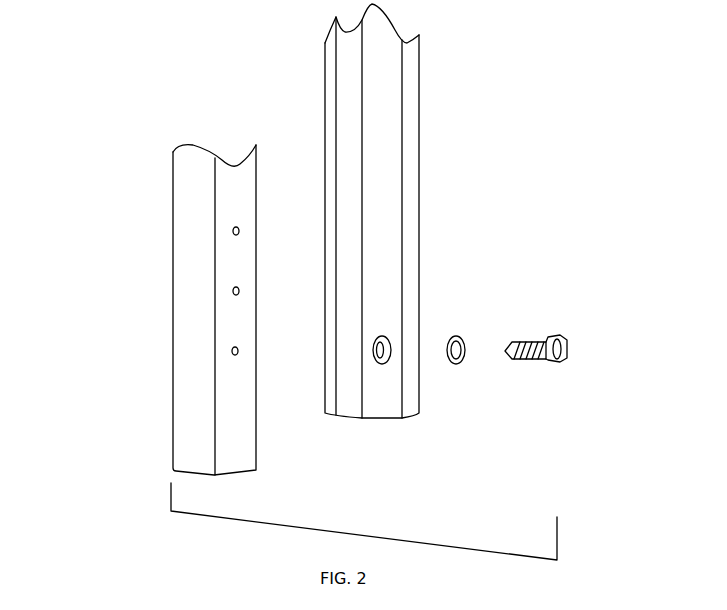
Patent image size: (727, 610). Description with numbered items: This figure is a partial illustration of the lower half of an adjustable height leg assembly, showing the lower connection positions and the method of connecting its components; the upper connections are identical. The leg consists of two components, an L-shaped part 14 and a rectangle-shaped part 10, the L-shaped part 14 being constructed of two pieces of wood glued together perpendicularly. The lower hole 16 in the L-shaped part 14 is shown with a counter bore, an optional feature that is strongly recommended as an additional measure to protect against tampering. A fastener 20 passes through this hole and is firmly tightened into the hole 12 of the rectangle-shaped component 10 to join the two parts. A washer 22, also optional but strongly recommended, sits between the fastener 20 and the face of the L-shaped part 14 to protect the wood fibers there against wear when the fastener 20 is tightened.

The rectangle-shaped part 10 is at (185, 257).
The hole 12 is at (230, 355).
The L-shaped part 14 is at (405, 182).
The lower hole 16 is at (389, 350).
The fastener 20 is at (568, 349).
The washer 22 is at (462, 358).